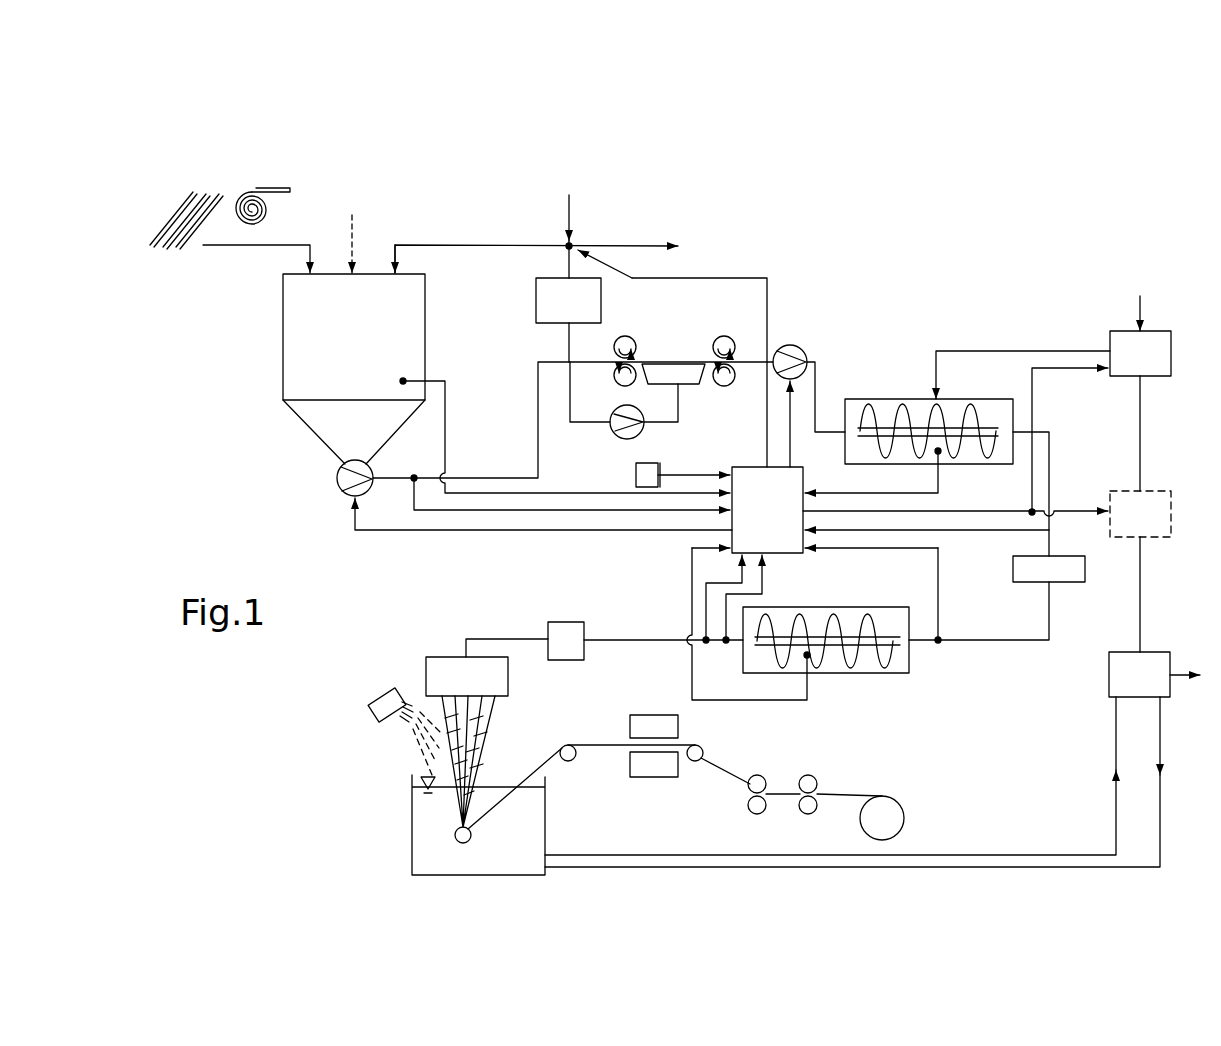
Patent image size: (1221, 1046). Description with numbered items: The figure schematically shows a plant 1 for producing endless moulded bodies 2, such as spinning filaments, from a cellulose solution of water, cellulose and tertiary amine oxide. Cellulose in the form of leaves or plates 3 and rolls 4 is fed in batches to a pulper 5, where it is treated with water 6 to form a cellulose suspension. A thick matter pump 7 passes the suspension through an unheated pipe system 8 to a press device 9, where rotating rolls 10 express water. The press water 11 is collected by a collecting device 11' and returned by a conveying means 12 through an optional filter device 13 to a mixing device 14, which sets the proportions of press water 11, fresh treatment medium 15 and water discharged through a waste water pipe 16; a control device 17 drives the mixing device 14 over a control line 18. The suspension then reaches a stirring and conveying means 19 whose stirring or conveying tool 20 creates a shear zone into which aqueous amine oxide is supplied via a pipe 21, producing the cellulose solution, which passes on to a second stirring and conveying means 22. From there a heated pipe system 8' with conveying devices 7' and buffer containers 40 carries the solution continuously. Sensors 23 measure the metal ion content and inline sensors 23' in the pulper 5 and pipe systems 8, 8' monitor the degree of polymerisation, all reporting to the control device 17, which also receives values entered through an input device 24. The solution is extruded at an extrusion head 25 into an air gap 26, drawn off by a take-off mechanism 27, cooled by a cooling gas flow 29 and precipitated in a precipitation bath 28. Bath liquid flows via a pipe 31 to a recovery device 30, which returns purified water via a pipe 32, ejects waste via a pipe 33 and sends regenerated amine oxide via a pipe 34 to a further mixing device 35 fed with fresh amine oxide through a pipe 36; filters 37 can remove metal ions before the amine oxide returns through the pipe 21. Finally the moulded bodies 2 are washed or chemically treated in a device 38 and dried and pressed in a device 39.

The plant 1 is at (966, 250).
The endless moulded bodies 2 is at (490, 738).
The leaves or plates 3 is at (222, 185).
The rolls 4 is at (298, 185).
The pulper 5 is at (283, 343).
The water 6 is at (416, 245).
The thick matter pump 7 is at (336, 485).
The conveying devices 7' is at (805, 395).
The pipe system 8 is at (612, 420).
The heated pipe system 8' is at (846, 559).
The press device 9 is at (680, 353).
The rotating rolls 10 is at (632, 326).
The press water 11 is at (627, 414).
The collecting device 11' is at (710, 403).
The conveying means 12 is at (618, 437).
The filter device 13 is at (536, 306).
The mixing device 14 is at (585, 238).
The fresh treatment medium 15 is at (568, 222).
The waste water pipe 16 is at (648, 243).
The control device 17 is at (736, 467).
The control line 18 is at (767, 312).
The stirring and conveying means 19 is at (888, 399).
The stirring or conveying tool 20 is at (985, 462).
The pipe 21 is at (972, 351).
The second stirring and conveying means 22 is at (893, 673).
The sensors 23 is at (840, 587).
The inline sensors 23' is at (738, 518).
The input device 24 is at (636, 476).
The extrusion head 25 is at (426, 678).
The air gap 26 is at (398, 742).
The take-off mechanism 27 is at (570, 762).
The precipitation bath 28 is at (449, 869).
The cooling gas flow 29 is at (495, 718).
The recovery device 30 is at (1109, 678).
The pipe 31 is at (955, 855).
The pipe 32 is at (1160, 822).
The pipe 33 is at (1185, 675).
The pipe 34 is at (1140, 595).
The further mixing device 35 is at (1171, 352).
The pipe 36 is at (1143, 303).
The filters 37 is at (1171, 515).
The device 38 is at (652, 778).
The device 39 is at (781, 783).
The buffer containers 40 is at (1068, 582).